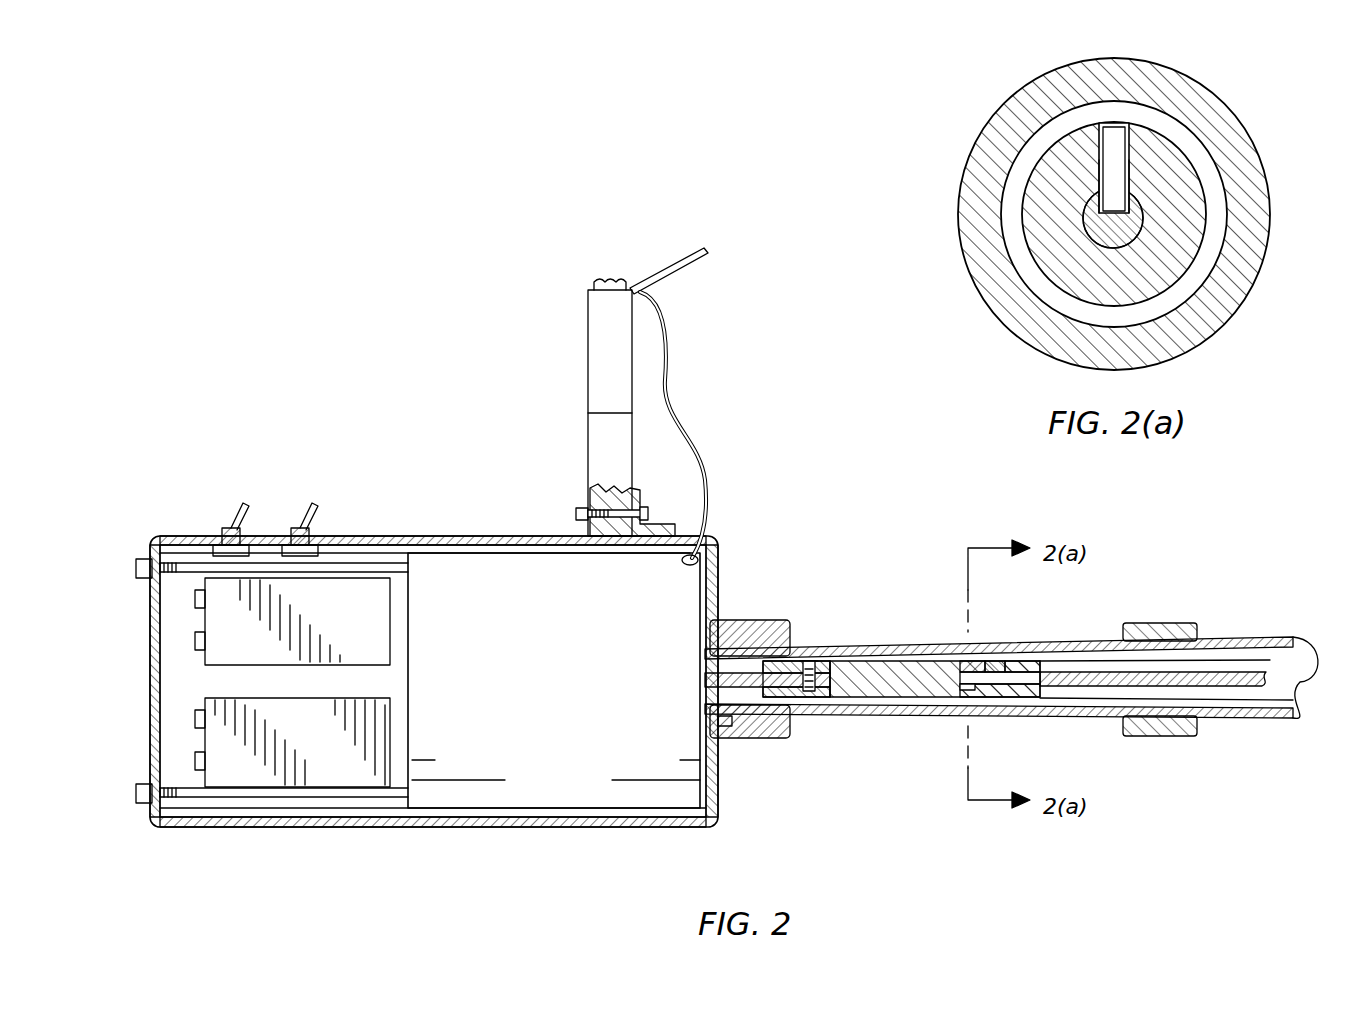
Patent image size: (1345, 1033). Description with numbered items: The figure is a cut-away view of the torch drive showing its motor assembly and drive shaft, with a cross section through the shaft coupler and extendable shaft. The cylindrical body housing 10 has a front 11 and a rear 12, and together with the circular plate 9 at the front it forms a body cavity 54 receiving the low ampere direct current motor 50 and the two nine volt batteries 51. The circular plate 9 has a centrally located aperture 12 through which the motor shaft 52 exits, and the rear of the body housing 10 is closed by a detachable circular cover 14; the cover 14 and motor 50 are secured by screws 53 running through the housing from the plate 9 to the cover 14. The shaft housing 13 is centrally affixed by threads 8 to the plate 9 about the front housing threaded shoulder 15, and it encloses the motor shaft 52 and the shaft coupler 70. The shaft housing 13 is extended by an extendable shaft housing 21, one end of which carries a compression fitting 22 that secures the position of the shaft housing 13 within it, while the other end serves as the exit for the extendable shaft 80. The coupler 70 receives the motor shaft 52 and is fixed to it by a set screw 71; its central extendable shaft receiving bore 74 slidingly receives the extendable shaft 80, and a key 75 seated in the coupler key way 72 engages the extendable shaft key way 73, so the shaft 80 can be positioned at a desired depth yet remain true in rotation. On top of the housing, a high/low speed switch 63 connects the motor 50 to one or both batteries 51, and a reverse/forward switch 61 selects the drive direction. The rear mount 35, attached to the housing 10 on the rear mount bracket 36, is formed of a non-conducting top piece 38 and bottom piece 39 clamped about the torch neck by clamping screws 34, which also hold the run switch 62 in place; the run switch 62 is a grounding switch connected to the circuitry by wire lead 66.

In FIG. 2, the threads 8 is at (790, 650).
In FIG. 2, the circular plate 9 is at (722, 600).
In FIG. 2, the body housing 10 is at (500, 827).
In FIG. 2, the front 11 is at (745, 813).
In FIG. 2, the rear / aperture 12 is at (140, 800).
In FIG. 2, the shaft housing 13 is at (1090, 718).
In FIG. 2, the detachable circular cover 14 is at (150, 718).
In FIG. 2, the front housing threaded shoulder 15 is at (757, 622).
In FIG. 2, the extendable shaft housing 21 is at (1268, 646).
In FIG. 2, the compression fitting 22 is at (1175, 625).
In FIG. 2, the clamping screws 34 is at (596, 282).
In FIG. 2, the rear mount 35 is at (550, 396).
In FIG. 2, the rear mount bracket 36 is at (680, 520).
In FIG. 2, the top piece 38 is at (588, 328).
In FIG. 2, the bottom piece 39 is at (588, 440).
In FIG. 2, the motor 50 is at (568, 683).
In FIG. 2, the batteries 51 is at (368, 618).
In FIG. 2, the motor shaft 52 is at (760, 730).
In FIG. 2, the screws 53 is at (350, 553).
In FIG. 2, the body cavity 54 is at (182, 686).
In FIG. 2, the reverse/forward switch 61 is at (325, 754).
In FIG. 2, the run switch 62 is at (682, 272).
In FIG. 2, the high/low speed switch 63 is at (242, 505).
In FIG. 2, the wire lead 66 is at (706, 440).
In FIG. 2, the shaft coupler 70 is at (855, 700).
In FIG. 2a, the shaft coupler 70 is at (1180, 150).
In FIG. 2, the set screw 71 is at (825, 661).
In FIG. 2, the key way 72 is at (1000, 661).
In FIG. 2a, the key way 72 is at (1100, 145).
In FIG. 2, the extendable shaft key way 73 is at (1030, 661).
In FIG. 2a, the extendable shaft key way 73 is at (1070, 230).
In FIG. 2, the extendable shaft receiving bore 74 is at (1042, 700).
In FIG. 2a, the extendable shaft receiving bore 74 is at (1135, 205).
In FIG. 2, the key 75 is at (976, 661).
In FIG. 2a, the key 75 is at (1082, 62).
In FIG. 2, the extendable shaft 80 is at (1220, 690).
In FIG. 2a, the extendable shaft 80 is at (1135, 242).